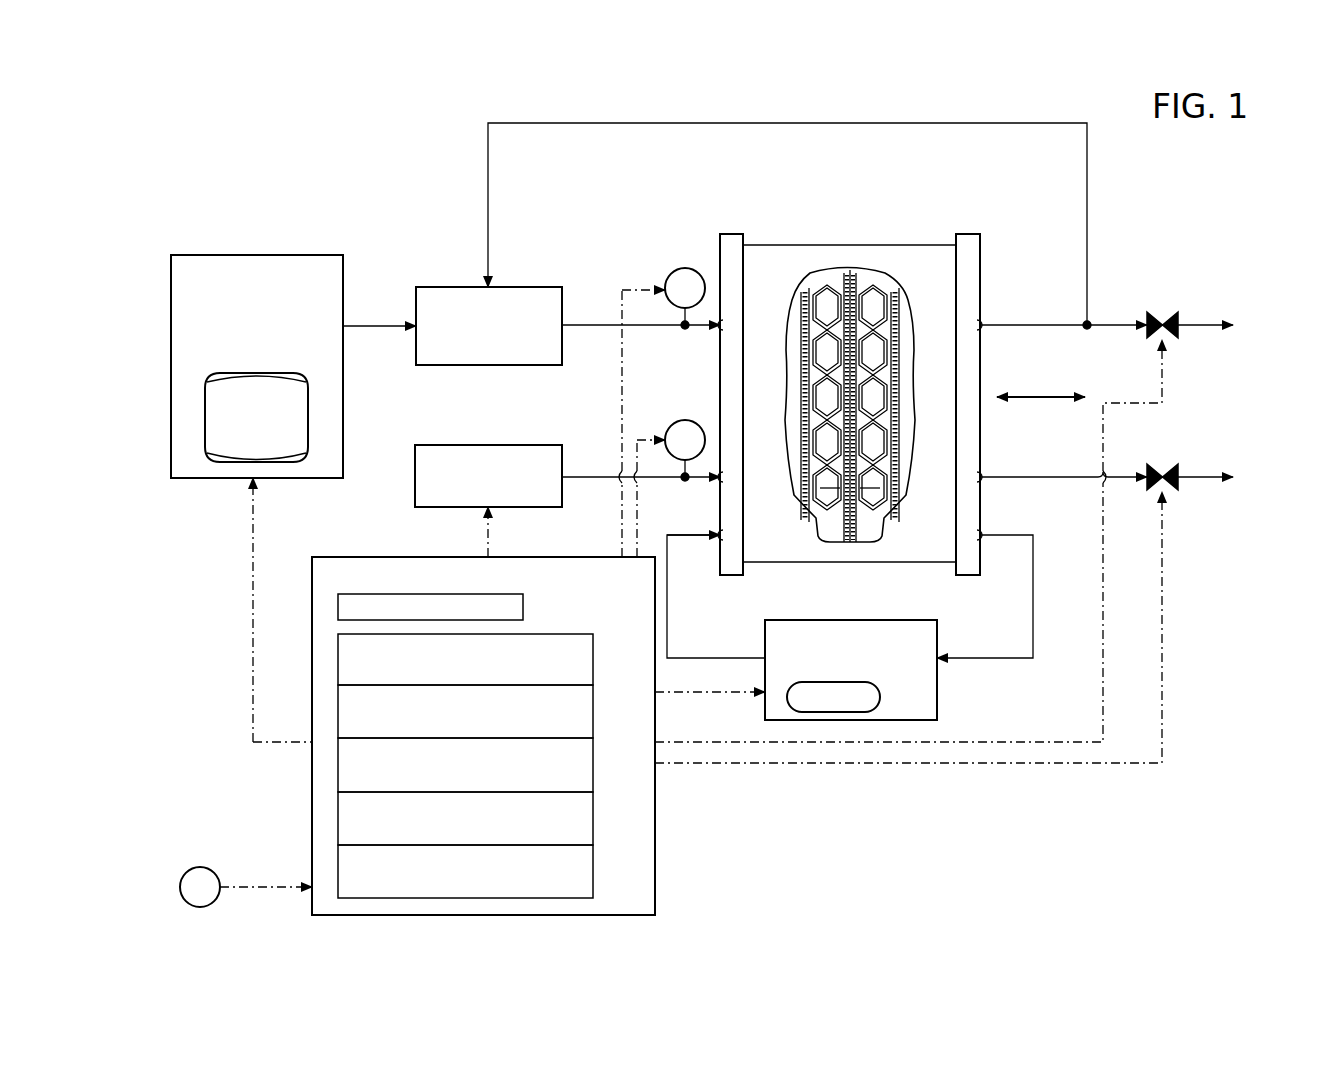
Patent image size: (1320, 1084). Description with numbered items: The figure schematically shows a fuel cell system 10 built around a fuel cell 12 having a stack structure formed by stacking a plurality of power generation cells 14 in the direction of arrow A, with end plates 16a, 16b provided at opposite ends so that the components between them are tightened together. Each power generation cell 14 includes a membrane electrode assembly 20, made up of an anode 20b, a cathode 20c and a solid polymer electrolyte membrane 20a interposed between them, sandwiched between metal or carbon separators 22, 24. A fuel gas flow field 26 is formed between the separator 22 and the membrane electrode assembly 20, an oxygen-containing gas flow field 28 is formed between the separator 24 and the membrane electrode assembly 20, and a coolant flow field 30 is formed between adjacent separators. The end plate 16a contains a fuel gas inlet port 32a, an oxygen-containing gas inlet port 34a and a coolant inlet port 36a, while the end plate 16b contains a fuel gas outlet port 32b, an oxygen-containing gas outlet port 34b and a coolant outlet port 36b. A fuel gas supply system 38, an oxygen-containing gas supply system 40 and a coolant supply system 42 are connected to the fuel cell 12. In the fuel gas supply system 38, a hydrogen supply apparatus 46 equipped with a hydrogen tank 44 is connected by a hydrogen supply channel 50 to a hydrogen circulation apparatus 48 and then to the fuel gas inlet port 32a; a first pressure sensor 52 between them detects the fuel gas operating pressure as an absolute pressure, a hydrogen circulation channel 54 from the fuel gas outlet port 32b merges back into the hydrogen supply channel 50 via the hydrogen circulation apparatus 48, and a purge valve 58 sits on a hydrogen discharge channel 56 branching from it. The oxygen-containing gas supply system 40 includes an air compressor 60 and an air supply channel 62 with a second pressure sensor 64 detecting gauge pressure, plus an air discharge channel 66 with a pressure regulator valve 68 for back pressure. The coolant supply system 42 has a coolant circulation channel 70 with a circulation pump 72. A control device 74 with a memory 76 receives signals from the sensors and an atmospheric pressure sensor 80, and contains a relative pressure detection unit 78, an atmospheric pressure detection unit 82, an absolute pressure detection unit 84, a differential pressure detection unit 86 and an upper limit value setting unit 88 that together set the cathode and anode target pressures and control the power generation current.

The fuel cell system 10 is at (1220, 168).
The fuel cell 12 is at (937, 200).
The power generation cell 14 is at (925, 166).
The end plate 16a is at (732, 244).
The end plate 16b is at (969, 244).
The membrane electrode assembly 20 is at (885, 200).
The solid polymer electrolyte membrane 20a is at (849, 278).
The anode 20b is at (840, 283).
The cathode 20c is at (860, 283).
The separator 22 is at (830, 307).
The separator 24 is at (870, 305).
The fuel gas flow field 26 is at (818, 495).
The oxygen-containing gas flow field 28 is at (882, 495).
The coolant flow field 30 is at (865, 323).
The fuel gas inlet port 32a is at (720, 334).
The fuel gas outlet port 32b is at (979, 334).
The oxygen-containing gas inlet port 34a is at (720, 488).
The oxygen-containing gas outlet port 34b is at (979, 488).
The coolant inlet port 36a is at (720, 548).
The coolant outlet port 36b is at (979, 548).
The fuel gas supply system 38 is at (457, 228).
The oxygen-containing gas supply system 40 is at (458, 425).
The coolant supply system 42 is at (946, 640).
The hydrogen tank 44 is at (258, 373).
The hydrogen supply apparatus 46 is at (322, 256).
The hydrogen circulation apparatus 48 is at (542, 286).
The hydrogen supply channel 50 is at (385, 324).
The first pressure sensor 52 is at (686, 266).
The hydrogen circulation channel 54 is at (952, 120).
The hydrogen discharge channel 56 is at (1112, 320).
The purge valve 58 is at (1163, 313).
The air compressor 60 is at (542, 445).
The air supply channel 62 is at (594, 476).
The second pressure sensor 64 is at (686, 418).
The air discharge channel 66 is at (1022, 475).
The pressure regulator valve 68 is at (1163, 465).
The coolant circulation channel 70 is at (715, 656).
The circulation pump 72 is at (882, 695).
The control device 74 is at (540, 556).
The memory 76 is at (524, 607).
The relative pressure detection unit 78 is at (594, 656).
The atmospheric pressure sensor 80 is at (201, 868).
The atmospheric pressure detection unit 82 is at (594, 708).
The absolute pressure detection unit 84 is at (594, 763).
The differential pressure detection unit 86 is at (594, 821).
The upper limit value setting unit 88 is at (594, 868).